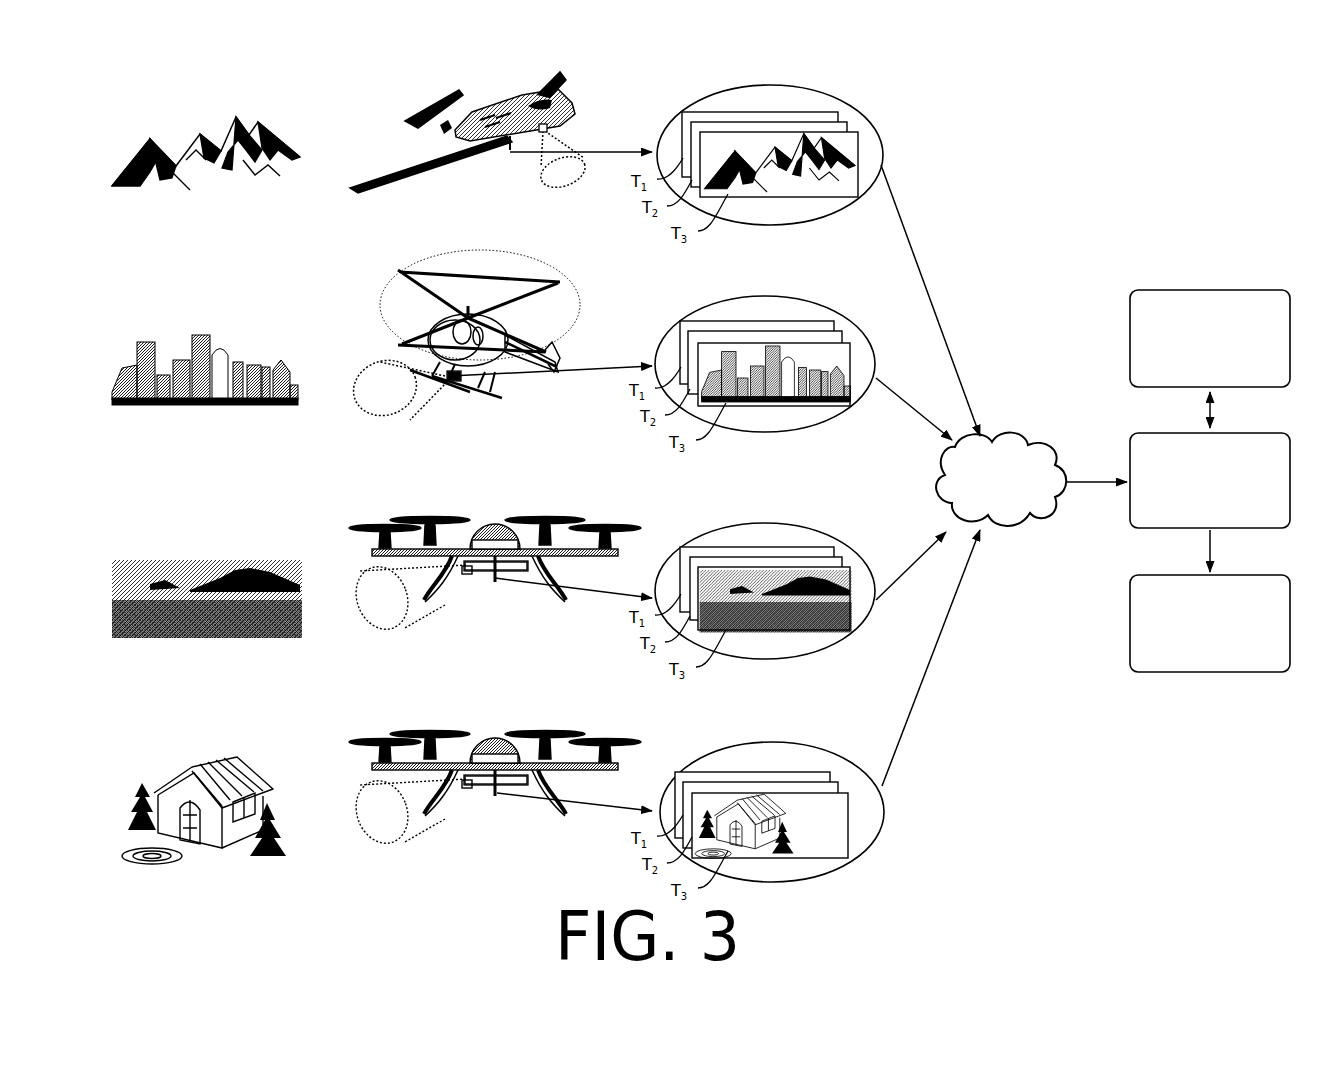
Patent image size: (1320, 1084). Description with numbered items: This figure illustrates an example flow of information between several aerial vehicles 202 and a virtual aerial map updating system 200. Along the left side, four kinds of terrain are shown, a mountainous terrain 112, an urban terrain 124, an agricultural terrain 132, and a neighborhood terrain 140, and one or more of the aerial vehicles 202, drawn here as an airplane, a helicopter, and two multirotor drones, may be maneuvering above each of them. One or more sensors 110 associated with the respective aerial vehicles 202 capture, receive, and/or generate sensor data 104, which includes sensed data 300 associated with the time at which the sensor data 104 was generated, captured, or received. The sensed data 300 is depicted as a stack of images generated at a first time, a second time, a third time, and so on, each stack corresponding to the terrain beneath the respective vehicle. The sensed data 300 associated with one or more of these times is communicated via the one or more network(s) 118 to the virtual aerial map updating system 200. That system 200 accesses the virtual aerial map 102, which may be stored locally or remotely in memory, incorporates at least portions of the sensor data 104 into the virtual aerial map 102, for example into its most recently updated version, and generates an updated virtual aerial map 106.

The mountainous terrain 112 is at (206, 104).
The urban terrain 124 is at (206, 323).
The agricultural terrain 132 is at (206, 538).
The neighborhood terrain 140 is at (206, 738).
The aerial vehicle 202 is at (500, 100).
The sensor 110 is at (509, 152).
The sensor data 104 is at (713, 89).
The sensed data 300 is at (771, 100).
The network(s) 118 is at (1001, 479).
The virtual aerial map 102 is at (1210, 338).
The virtual aerial map updating system 200 is at (1210, 480).
The updated virtual aerial map 106 is at (1210, 623).